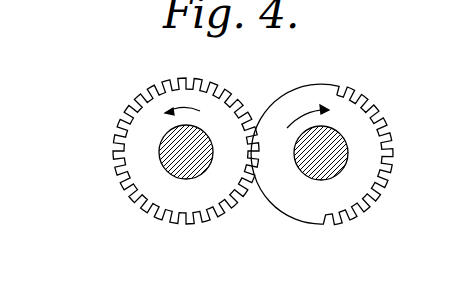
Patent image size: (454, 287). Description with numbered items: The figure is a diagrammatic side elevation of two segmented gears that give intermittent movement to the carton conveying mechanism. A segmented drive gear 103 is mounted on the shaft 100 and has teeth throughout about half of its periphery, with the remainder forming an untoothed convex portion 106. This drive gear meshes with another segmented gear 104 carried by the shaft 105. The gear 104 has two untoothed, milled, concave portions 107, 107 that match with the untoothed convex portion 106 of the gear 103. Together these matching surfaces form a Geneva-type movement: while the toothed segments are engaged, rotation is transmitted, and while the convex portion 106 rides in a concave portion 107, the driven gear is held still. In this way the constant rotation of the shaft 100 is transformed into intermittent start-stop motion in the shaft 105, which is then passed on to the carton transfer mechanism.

The shaft 100 is at (348, 153).
The segmented drive gear 103 is at (370, 167).
The segmented gear 104 is at (220, 120).
The shaft 105 is at (166, 137).
The untoothed convex portion 106 is at (267, 117).
The untoothed, milled, concave portion 107 is at (115, 148).